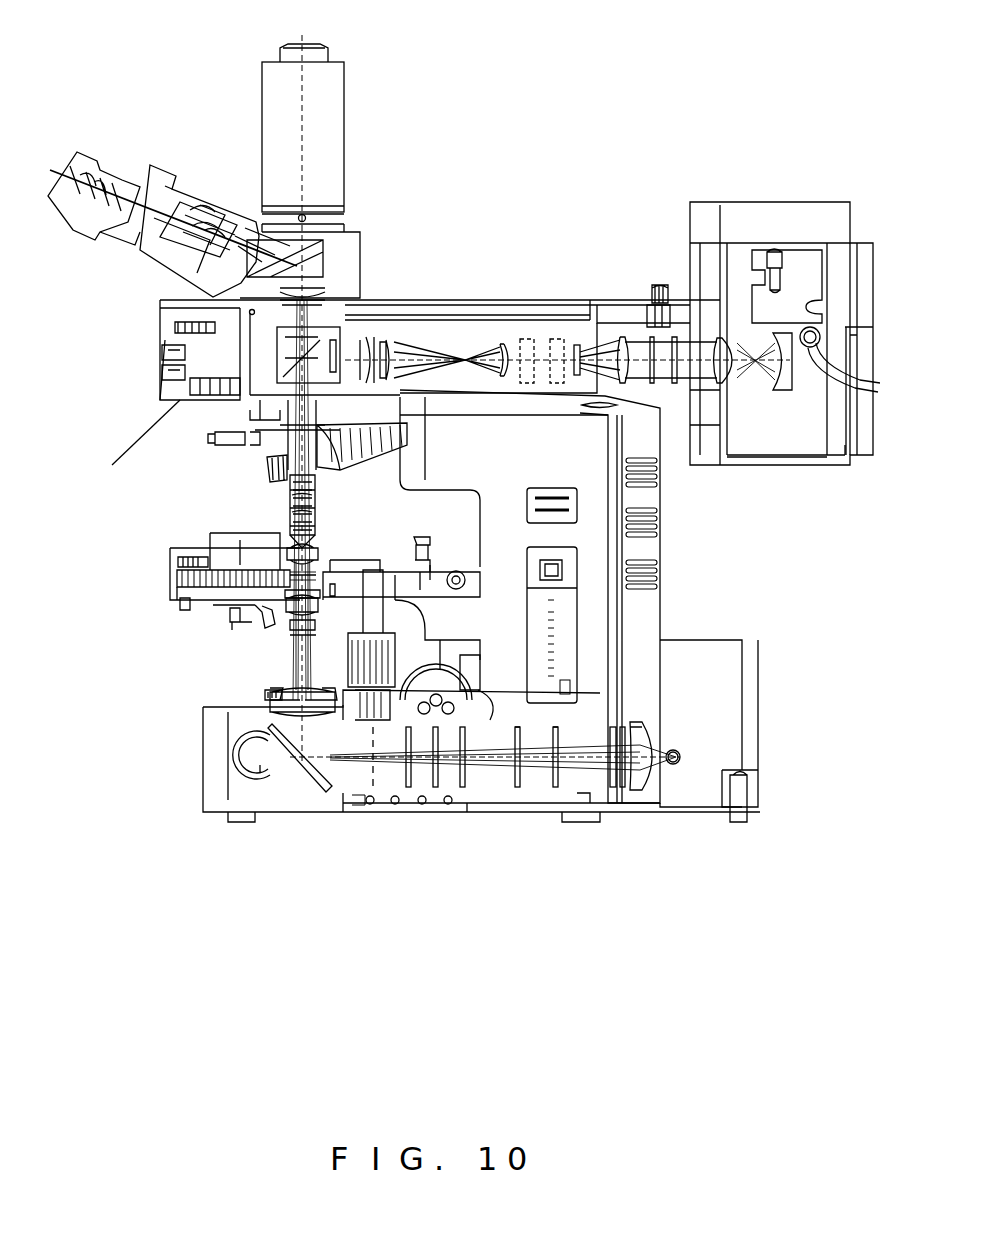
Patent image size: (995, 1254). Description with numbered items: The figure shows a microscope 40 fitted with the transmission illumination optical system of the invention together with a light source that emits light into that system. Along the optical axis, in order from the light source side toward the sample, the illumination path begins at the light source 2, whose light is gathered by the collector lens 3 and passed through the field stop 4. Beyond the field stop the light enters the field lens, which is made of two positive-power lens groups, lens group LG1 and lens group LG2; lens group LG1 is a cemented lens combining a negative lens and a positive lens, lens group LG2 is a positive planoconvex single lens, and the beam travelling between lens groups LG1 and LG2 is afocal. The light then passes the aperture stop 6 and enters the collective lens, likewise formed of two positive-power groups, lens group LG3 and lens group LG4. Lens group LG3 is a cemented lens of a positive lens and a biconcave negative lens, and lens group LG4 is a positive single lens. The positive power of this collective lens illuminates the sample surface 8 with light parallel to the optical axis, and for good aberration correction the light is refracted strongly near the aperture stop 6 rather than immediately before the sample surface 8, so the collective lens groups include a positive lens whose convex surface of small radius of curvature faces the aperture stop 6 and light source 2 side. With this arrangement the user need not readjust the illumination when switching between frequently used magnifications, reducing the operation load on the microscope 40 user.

The microscope 40 is at (464, 428).
The lens group LG1 is at (295, 705).
The lens group LG2 is at (300, 605).
The lens group LG3 is at (300, 548).
The lens group LG4 is at (293, 527).
The sample surface 8 is at (313, 585).
The aperture stop 6 is at (313, 587).
The light source 2 is at (680, 755).
The collector lens 3 is at (520, 767).
The field stop 4 is at (373, 772).